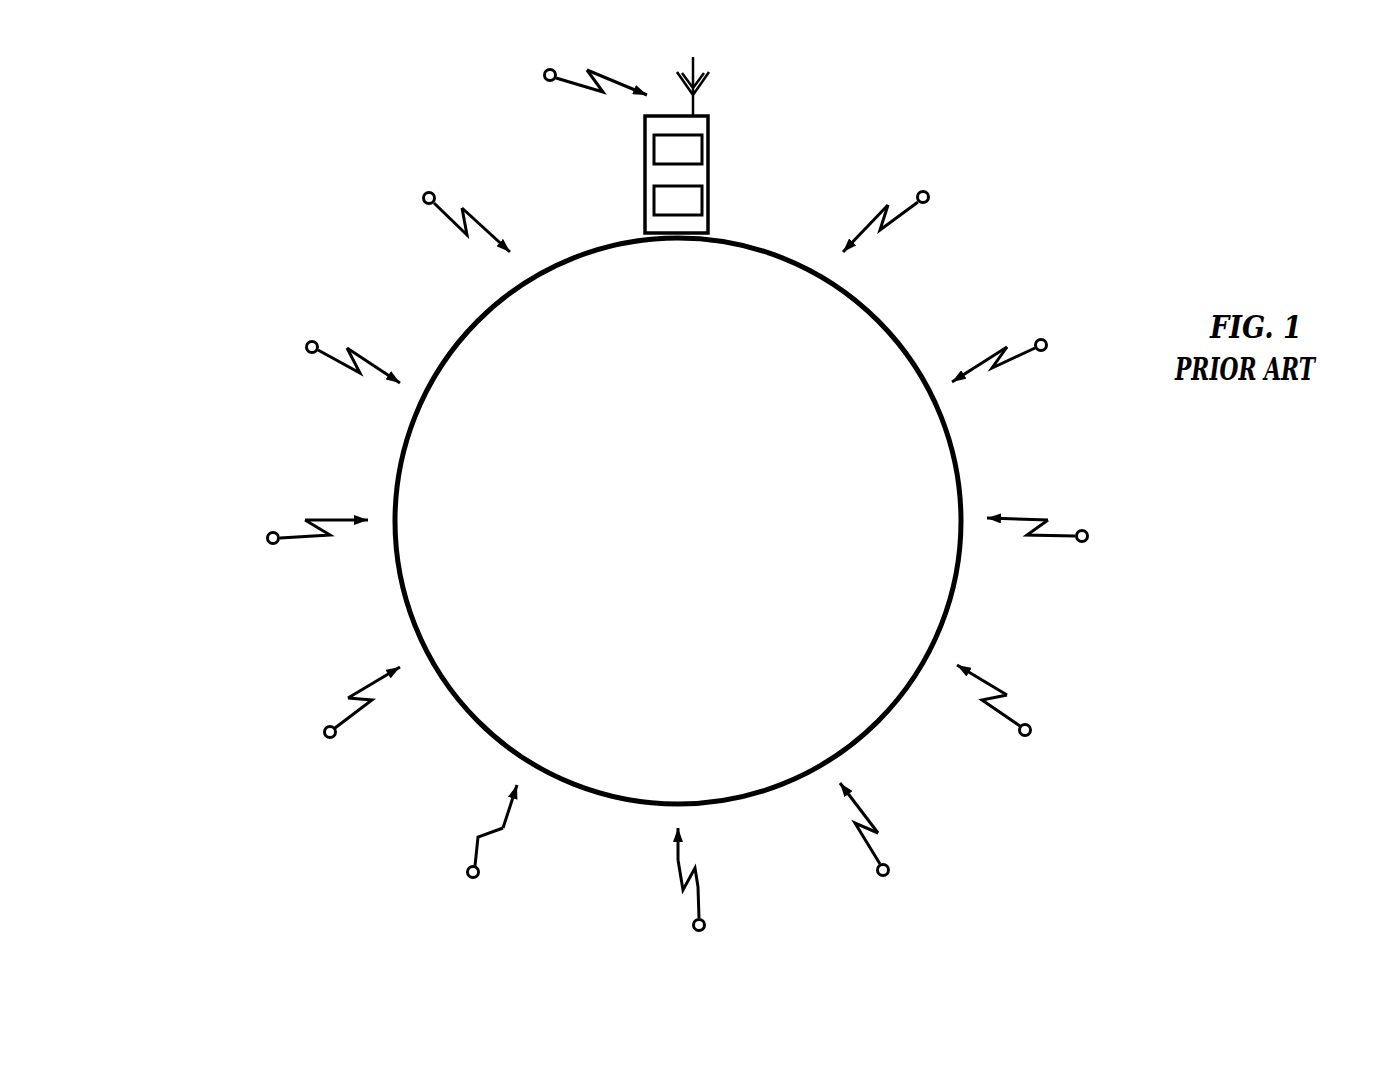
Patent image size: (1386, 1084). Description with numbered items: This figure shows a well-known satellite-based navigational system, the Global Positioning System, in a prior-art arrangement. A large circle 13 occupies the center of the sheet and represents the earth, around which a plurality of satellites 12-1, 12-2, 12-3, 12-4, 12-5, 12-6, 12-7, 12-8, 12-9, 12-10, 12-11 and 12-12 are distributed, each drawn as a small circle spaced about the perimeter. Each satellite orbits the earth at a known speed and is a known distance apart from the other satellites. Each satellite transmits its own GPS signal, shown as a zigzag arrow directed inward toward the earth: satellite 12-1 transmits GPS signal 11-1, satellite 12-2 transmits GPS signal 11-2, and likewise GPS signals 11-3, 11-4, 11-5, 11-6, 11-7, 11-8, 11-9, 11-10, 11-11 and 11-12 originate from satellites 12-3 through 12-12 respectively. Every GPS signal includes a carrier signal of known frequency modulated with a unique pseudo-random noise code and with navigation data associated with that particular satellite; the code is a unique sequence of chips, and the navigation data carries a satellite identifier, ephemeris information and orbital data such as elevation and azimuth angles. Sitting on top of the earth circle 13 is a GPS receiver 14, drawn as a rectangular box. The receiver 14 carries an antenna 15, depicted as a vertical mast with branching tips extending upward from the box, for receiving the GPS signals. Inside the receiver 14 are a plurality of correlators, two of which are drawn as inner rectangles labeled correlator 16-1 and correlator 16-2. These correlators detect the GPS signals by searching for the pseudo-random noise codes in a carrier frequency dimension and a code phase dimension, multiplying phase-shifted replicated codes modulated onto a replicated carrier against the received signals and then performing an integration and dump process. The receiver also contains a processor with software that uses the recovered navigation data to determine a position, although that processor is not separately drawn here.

The GPS signal 11-1 is at (580, 88).
The GPS signal 11-2 is at (902, 222).
The GPS signal 11-3 is at (1015, 360).
The GPS signal 11-4 is at (1050, 538).
The GPS signal 11-5 is at (985, 710).
The GPS signal 11-6 is at (860, 847).
The GPS signal 11-7 is at (700, 885).
The GPS signal 11-8 is at (500, 842).
The GPS signal 11-9 is at (360, 713).
The GPS signal 11-10 is at (310, 540).
The GPS signal 11-11 is at (337, 365).
The GPS signal 11-12 is at (450, 220).
The satellite 12-1 is at (543, 76).
The satellite 12-2 is at (929, 192).
The satellite 12-3 is at (1047, 340).
The satellite 12-4 is at (1088, 532).
The satellite 12-5 is at (1031, 725).
The satellite 12-6 is at (889, 865).
The satellite 12-7 is at (692, 925).
The satellite 12-8 is at (466, 872).
The satellite 12-9 is at (323, 732).
The satellite 12-10 is at (266, 538).
The satellite 12-11 is at (305, 347).
The satellite 12-12 is at (422, 198).
The cell 13 is at (962, 490).
The GPS receiver 14 is at (645, 167).
The antenna 15 is at (712, 85).
The correlator 16-1 is at (696, 156).
The correlator 16-2 is at (696, 212).